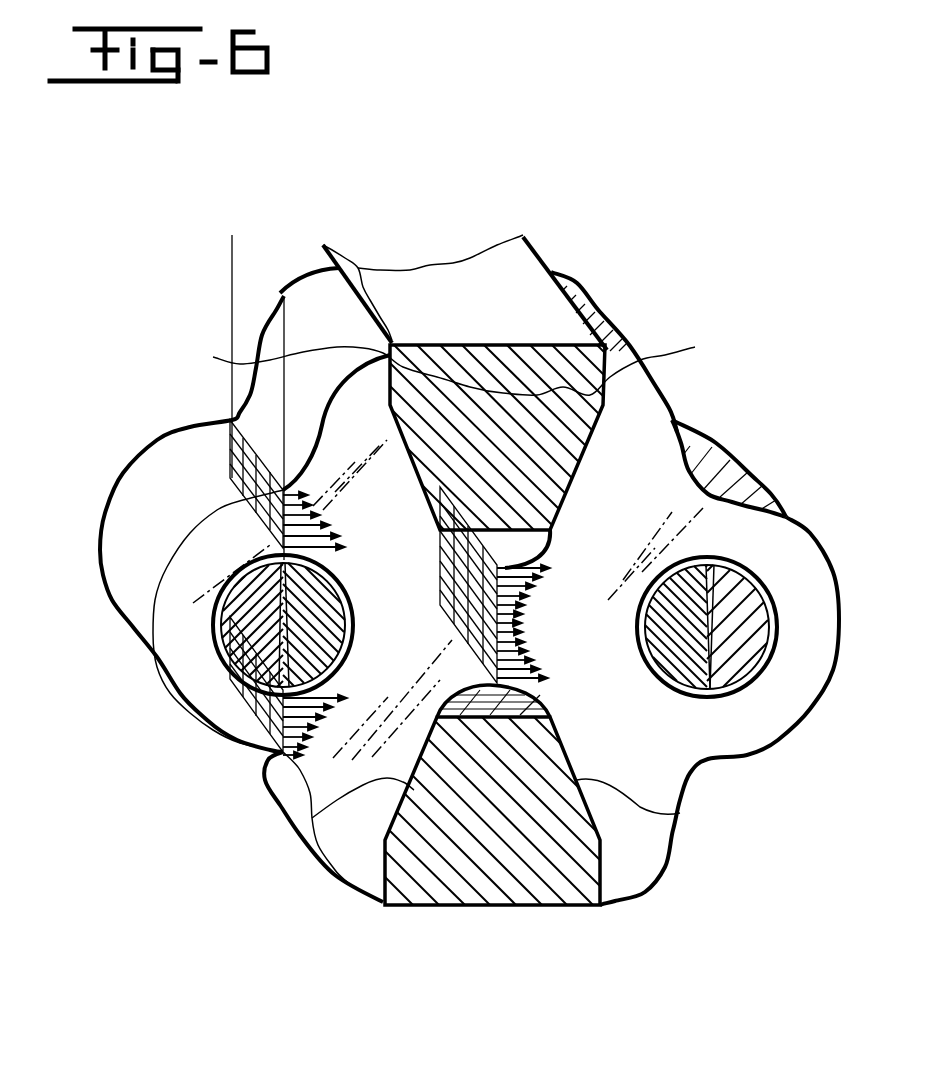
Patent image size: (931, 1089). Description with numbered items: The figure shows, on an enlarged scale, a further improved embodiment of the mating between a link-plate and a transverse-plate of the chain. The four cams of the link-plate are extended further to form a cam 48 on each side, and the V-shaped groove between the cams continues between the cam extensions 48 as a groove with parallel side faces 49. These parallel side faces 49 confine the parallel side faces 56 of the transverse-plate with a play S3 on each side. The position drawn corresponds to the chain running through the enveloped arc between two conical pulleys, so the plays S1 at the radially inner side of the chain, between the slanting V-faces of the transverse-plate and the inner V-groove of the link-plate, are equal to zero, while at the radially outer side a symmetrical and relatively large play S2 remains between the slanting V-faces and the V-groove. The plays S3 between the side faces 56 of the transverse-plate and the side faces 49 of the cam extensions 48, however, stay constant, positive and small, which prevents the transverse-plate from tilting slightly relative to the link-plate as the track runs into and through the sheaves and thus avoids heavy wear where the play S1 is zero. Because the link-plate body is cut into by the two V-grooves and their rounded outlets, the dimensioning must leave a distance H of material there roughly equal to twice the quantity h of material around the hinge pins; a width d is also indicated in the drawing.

The cam extension 48 is at (650, 418).
The parallel side faces of the cam extensions 49 is at (441, 560).
The parallel side faces of the transverse-plate 56 is at (557, 387).
The radially inward play S1 is at (697, 813).
The radially outward play S2 is at (605, 487).
The play between parallel faces S3 is at (648, 922).
The width d is at (284, 297).
The quantity of material round the hinge pins h is at (283, 490).
The distance of material H is at (505, 568).